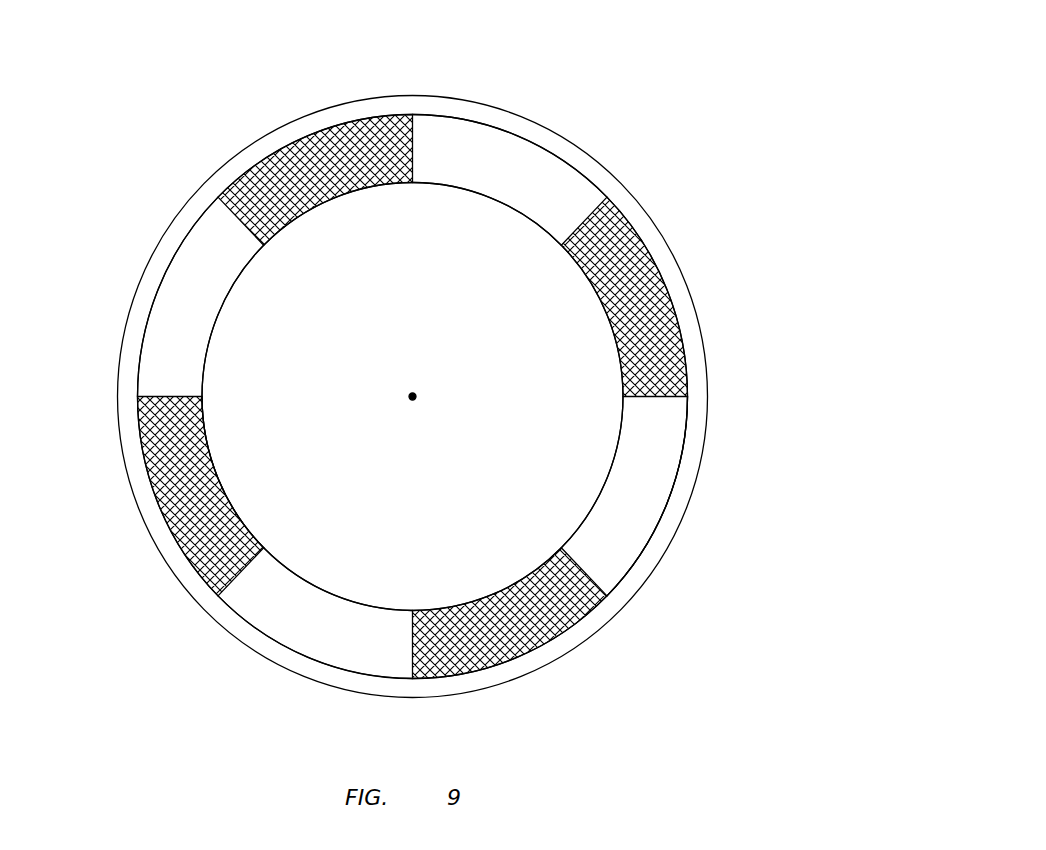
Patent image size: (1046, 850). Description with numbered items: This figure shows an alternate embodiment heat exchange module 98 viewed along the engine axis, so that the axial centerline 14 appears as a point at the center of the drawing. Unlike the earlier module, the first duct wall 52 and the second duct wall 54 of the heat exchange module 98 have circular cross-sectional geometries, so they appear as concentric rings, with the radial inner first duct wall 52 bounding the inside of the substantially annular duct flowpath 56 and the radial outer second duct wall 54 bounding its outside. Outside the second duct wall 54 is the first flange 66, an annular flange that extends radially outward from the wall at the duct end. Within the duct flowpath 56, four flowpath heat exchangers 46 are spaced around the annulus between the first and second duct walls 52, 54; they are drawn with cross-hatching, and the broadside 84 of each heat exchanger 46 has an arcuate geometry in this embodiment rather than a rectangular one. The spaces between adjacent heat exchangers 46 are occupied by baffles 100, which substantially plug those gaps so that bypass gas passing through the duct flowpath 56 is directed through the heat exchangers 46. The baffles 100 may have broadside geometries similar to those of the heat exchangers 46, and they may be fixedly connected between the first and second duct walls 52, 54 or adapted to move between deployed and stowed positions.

The heat exchange module 98 is at (660, 124).
The first flange 66 is at (130, 363).
The second duct wall 54 is at (147, 315).
The first duct wall 52 is at (210, 342).
The flowpath heat exchanger 46 is at (365, 117).
The baffle 100 is at (542, 157).
The duct flowpath 56 is at (656, 458).
The broadside 84 is at (213, 478).
The axial centerline 14 is at (414, 398).